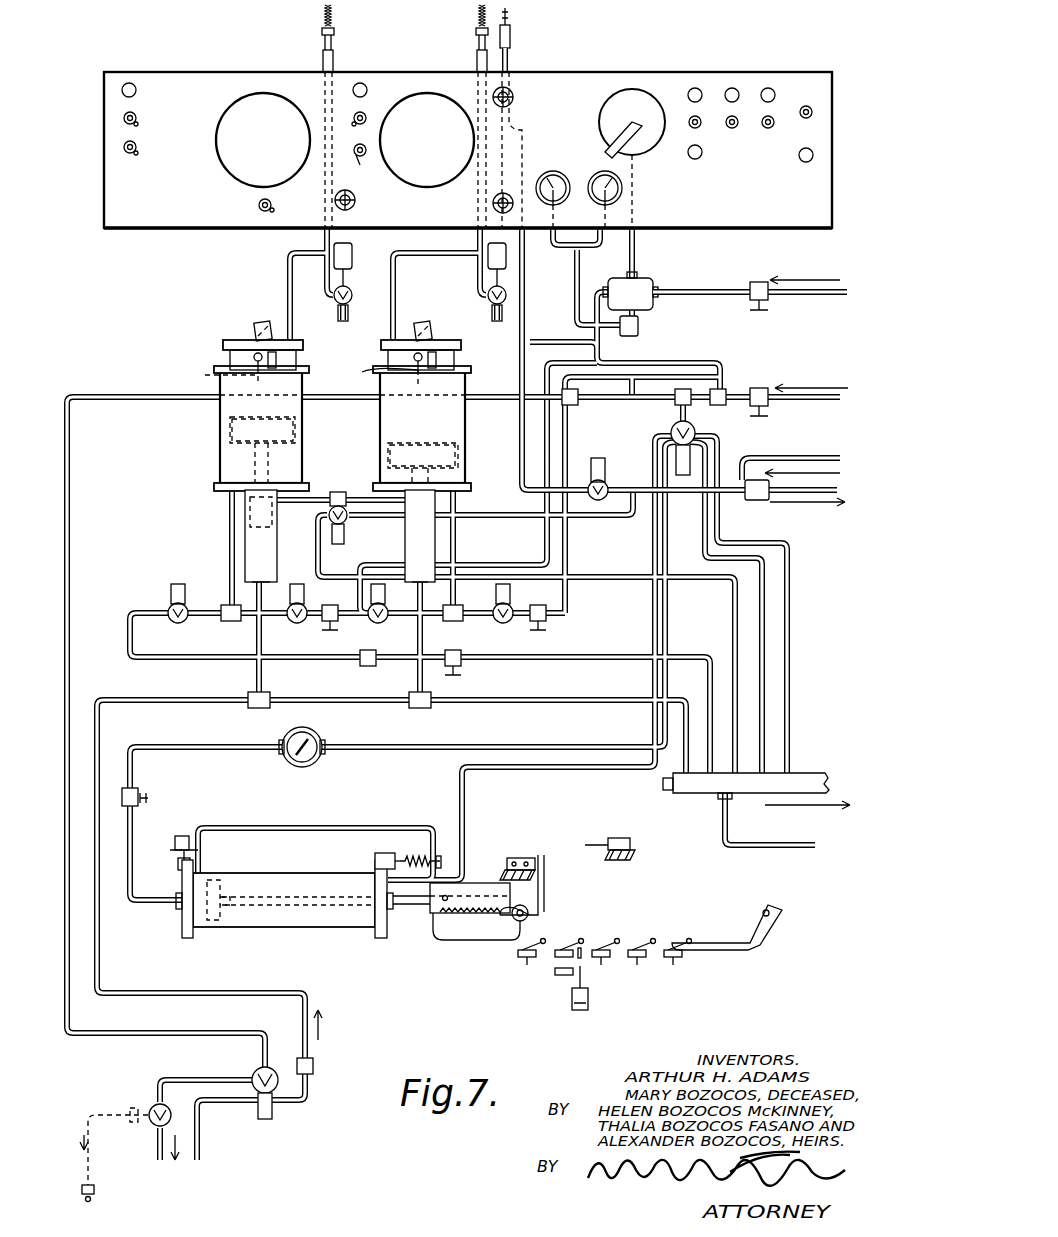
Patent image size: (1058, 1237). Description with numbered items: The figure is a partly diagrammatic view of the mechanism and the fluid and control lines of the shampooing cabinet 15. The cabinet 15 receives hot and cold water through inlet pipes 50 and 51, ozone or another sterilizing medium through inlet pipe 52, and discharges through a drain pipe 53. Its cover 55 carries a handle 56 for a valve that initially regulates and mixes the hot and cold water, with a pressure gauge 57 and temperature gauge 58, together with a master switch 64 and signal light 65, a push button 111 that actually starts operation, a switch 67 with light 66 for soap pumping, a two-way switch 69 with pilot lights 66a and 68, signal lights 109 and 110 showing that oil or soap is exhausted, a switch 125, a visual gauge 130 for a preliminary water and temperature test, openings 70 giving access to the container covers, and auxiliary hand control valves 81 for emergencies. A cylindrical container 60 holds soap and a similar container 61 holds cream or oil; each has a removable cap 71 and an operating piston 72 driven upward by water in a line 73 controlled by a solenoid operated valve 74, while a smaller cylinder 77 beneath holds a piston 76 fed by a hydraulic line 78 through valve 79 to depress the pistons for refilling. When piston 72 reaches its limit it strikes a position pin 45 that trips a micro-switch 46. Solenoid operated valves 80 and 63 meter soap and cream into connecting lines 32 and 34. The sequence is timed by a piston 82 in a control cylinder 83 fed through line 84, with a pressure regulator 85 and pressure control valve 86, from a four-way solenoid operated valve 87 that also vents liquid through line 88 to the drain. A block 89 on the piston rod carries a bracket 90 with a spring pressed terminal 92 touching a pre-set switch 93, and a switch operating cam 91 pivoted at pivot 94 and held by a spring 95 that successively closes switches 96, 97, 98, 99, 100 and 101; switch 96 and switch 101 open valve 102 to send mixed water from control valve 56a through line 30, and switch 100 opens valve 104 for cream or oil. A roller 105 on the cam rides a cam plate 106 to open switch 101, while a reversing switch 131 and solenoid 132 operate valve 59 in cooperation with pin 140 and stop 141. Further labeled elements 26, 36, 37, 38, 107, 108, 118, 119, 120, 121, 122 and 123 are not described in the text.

The cabinet 15 is at (88, 29).
The conduit 26 is at (80, 1185).
The line 30 is at (523, 283).
The connecting line 32 is at (474, 48).
The connecting line 34 is at (322, 48).
The scrubber supply line 36 is at (158, 1143).
The scrubber supply line 37 is at (200, 1143).
The drain pipe 38 is at (800, 850).
The position pin 45 is at (295, 383).
The micro-switch 46 is at (280, 360).
The inlet pipe 50 is at (822, 298).
The inlet pipe 51 is at (118, 395).
The inlet pipe 52 is at (822, 458).
The drain pipe 53 is at (808, 773).
The cover 55 is at (116, 225).
The handle 56 is at (598, 142).
The control valve 56a is at (650, 288).
The pressure gauge 57 is at (590, 178).
The temperature gauge 58 is at (550, 172).
The valve 59 is at (280, 1100).
The cylindrical container 60 is at (380, 422).
The container 61 is at (220, 410).
The solenoid operated valve 63 is at (352, 295).
The master switch 64 is at (812, 108).
The signal light 65 is at (773, 88).
The light 66 is at (735, 87).
The pilot light 66a is at (694, 87).
The switch 67 is at (731, 128).
The pilot light 68 is at (696, 160).
The two-way switch 69 is at (690, 128).
The openings 70 is at (220, 140).
The removable cap 71 is at (235, 340).
The operating piston 72 is at (228, 453).
The line 73 is at (455, 540).
The solenoid operated valve 74 is at (510, 620).
The piston 76 is at (250, 535).
The smaller cylinder 77 is at (245, 552).
The hydraulic line 78 is at (350, 490).
The solenoid operated valve 79 is at (348, 520).
The solenoid operated valve 80 is at (484, 292).
The auxiliary hand control valves 81 is at (356, 203).
The piston 82 is at (212, 925).
The control cylinder 83 is at (295, 920).
The line 84 is at (667, 526).
The pressure regulator 85 is at (316, 736).
The pressure control valve 86 is at (148, 795).
The four-way solenoid operated valve 87 is at (697, 433).
The line 88 is at (653, 540).
The block 89 is at (430, 930).
The bracket 90 is at (292, 828).
The switch operating cam 91 is at (505, 940).
The spring pressed terminal 92 is at (405, 853).
The pre-set switch 93 is at (380, 850).
The pivot 94 is at (478, 918).
The spring 95 is at (470, 935).
The switch 96 is at (527, 962).
The switch 97 is at (568, 948).
The switch 98 is at (560, 976).
The switch 99 is at (601, 958).
The switch 100 is at (636, 962).
The switch 101 is at (670, 958).
The solenoid operated valve 102 is at (598, 458).
The valve 104 is at (288, 620).
The roller 105 is at (532, 916).
The cam plate 106 is at (742, 918).
The fitting 107 is at (182, 836).
The fitting 108 is at (178, 866).
The signal light 109 is at (136, 88).
The signal light 110 is at (366, 83).
The push button 111 is at (769, 130).
The switch 118 is at (138, 114).
The switch 119 is at (138, 144).
The valve 120 is at (170, 592).
The switch 121 is at (366, 112).
The switch 122 is at (368, 167).
The valve 123 is at (392, 615).
The switch 125 is at (258, 206).
The visual gauge 130 is at (512, 36).
The reversing switch 131 is at (620, 838).
The solenoid 132 is at (578, 1012).
The pin 140 is at (545, 880).
The stop 141 is at (523, 857).